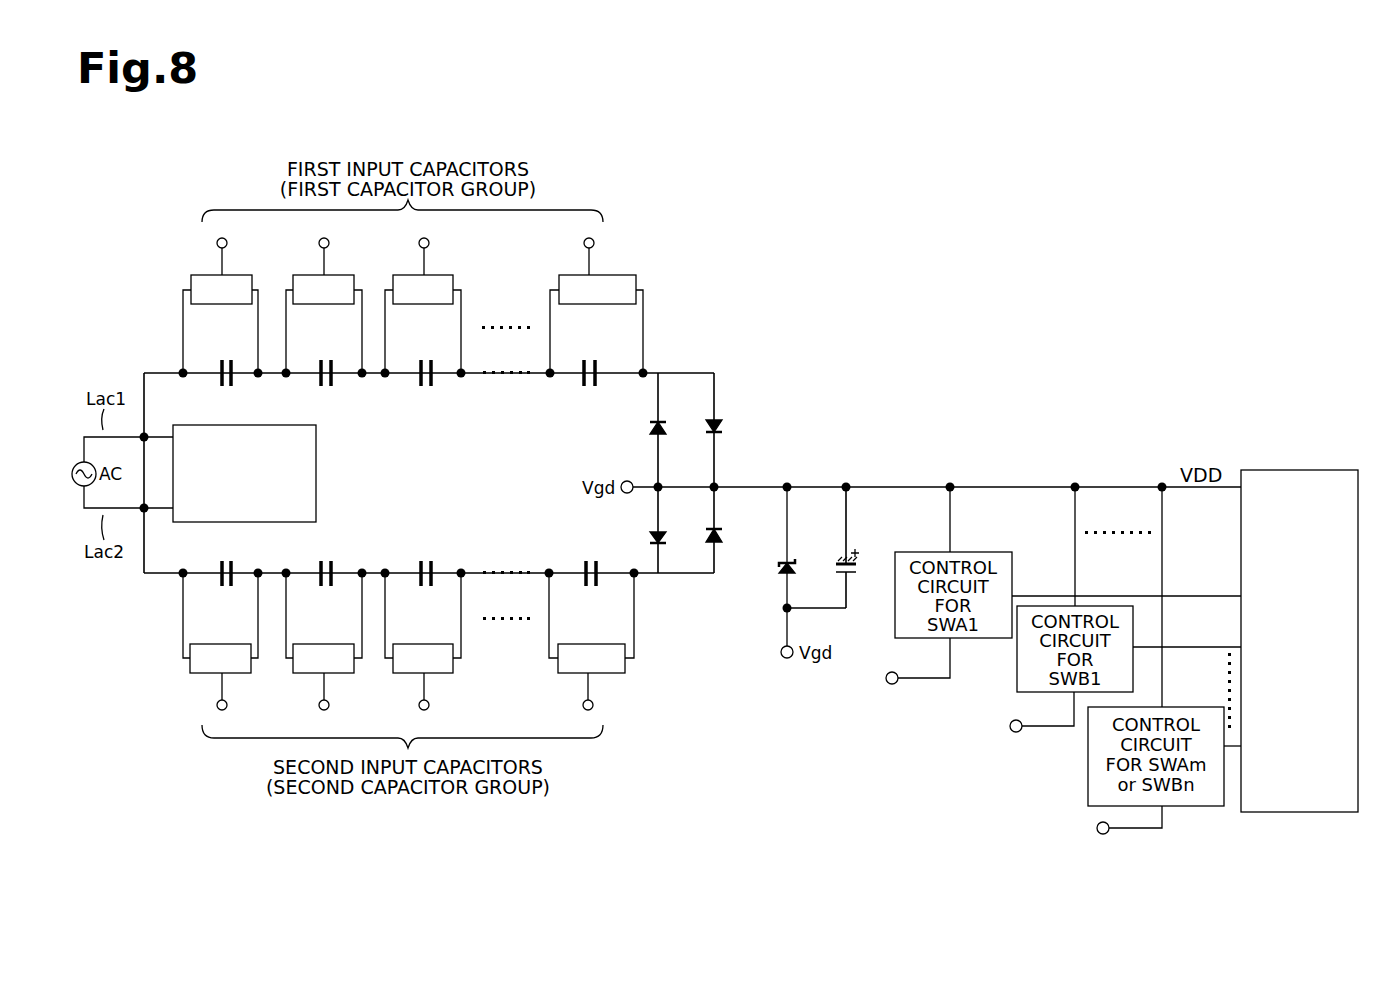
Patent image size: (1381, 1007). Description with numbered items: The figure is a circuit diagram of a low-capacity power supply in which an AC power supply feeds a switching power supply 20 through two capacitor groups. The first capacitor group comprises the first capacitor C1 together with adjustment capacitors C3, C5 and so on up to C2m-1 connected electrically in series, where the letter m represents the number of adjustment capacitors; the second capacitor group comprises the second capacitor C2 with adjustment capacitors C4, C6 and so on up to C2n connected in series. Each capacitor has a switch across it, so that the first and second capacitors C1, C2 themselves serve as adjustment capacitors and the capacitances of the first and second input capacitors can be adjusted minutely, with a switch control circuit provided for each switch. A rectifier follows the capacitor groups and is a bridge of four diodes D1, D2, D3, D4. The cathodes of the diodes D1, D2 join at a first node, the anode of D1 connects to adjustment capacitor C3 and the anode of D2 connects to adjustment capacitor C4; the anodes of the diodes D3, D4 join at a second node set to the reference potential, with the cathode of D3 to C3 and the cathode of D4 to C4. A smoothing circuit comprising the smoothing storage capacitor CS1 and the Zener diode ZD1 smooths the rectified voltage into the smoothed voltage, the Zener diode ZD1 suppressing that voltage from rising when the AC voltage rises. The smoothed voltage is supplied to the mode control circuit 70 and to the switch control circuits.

The switching power supply 20 is at (316, 477).
The mode control circuit 70 is at (1300, 470).
The first capacitor C1 is at (243, 362).
The adjustment capacitor C3 is at (343, 362).
The adjustment capacitor C5 is at (427, 362).
The adjustment capacitor C2m-1 is at (581, 362).
The second capacitor C2 is at (244, 587).
The adjustment capacitor C4 is at (344, 587).
The adjustment capacitor C6 is at (426, 587).
The adjustment capacitor C2n is at (589, 590).
The diode D1 is at (717, 421).
The diode D2 is at (717, 540).
The diode D3 is at (661, 425).
The diode D4 is at (652, 533).
The Zener diode ZD1 is at (789, 573).
The smoothing storage capacitor CS1 is at (849, 575).